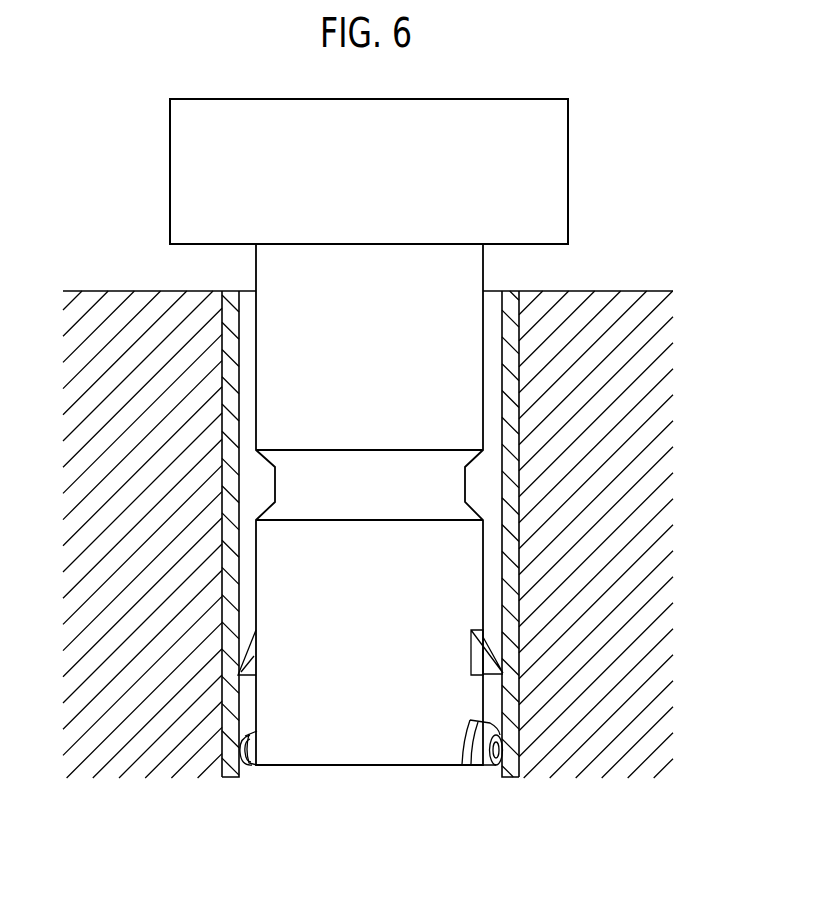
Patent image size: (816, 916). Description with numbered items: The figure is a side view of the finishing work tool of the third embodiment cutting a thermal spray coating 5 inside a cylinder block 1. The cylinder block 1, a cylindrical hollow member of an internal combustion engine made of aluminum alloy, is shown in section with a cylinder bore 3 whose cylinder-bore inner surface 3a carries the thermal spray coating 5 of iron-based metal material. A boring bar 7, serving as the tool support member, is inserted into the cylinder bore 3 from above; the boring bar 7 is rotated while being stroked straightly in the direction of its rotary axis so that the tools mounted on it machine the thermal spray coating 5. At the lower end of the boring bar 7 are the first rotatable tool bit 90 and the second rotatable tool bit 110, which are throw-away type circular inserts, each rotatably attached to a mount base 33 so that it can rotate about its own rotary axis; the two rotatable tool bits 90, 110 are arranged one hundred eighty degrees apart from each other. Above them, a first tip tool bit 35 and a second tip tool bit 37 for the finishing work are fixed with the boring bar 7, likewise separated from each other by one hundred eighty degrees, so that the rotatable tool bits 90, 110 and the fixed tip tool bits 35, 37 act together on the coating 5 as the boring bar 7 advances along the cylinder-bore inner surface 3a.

The cylinder block 1 is at (134, 291).
The cylinder bore 3 is at (492, 307).
The cylinder-bore inner surface 3a is at (510, 361).
The thermal spray coating 5 is at (232, 296).
The boring bar 7 is at (347, 753).
The mount base 33 is at (250, 753).
The first tip tool bit 35 is at (257, 663).
The second tip tool bit 37 is at (476, 660).
The first rotatable tool bit 90 is at (243, 768).
The second rotatable tool bit 110 is at (495, 768).